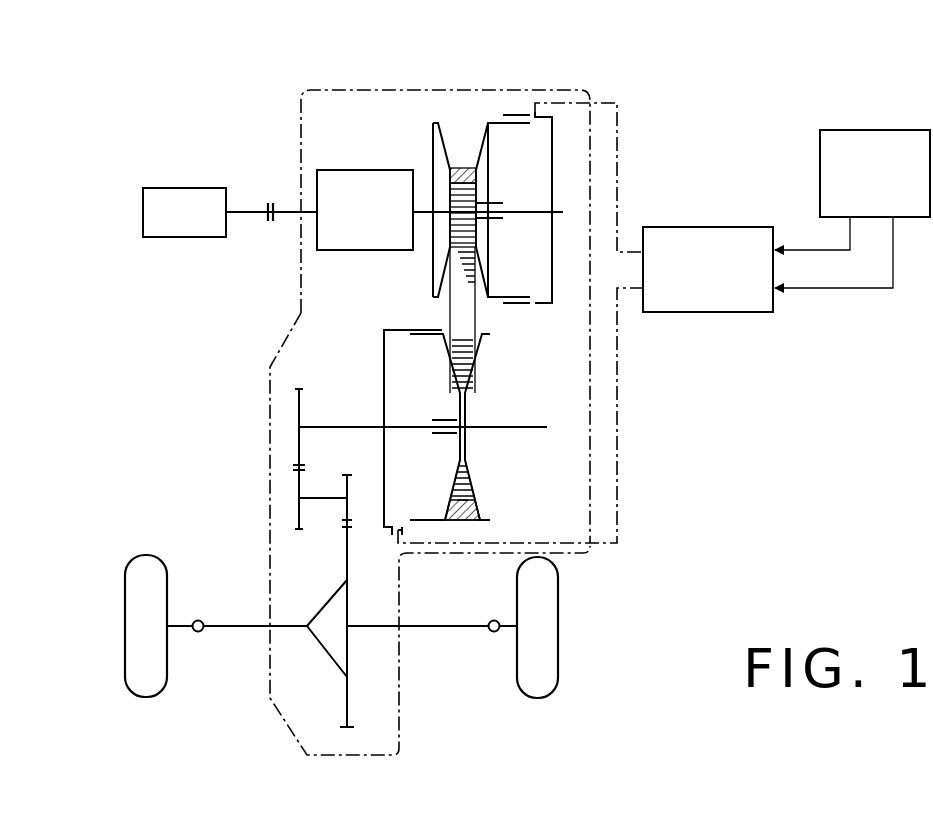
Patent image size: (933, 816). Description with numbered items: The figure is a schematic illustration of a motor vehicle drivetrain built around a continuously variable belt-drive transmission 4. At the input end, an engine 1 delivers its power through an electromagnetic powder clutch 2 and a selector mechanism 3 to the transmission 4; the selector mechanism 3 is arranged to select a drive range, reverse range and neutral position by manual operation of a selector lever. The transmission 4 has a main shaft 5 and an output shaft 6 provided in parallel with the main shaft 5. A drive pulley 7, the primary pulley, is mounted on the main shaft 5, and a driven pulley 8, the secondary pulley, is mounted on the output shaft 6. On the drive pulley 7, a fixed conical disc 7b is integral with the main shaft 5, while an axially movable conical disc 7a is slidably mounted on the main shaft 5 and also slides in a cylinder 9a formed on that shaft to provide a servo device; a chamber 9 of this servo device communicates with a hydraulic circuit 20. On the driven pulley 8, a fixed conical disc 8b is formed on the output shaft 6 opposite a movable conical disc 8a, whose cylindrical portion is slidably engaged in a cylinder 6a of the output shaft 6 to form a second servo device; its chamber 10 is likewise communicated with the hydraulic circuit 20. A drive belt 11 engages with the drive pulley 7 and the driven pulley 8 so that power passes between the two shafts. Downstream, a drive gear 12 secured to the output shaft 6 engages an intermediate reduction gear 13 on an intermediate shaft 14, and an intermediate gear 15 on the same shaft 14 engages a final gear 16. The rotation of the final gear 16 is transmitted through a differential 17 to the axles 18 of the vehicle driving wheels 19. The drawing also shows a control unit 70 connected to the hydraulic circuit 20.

The engine 1 is at (192, 187).
The electromagnetic powder clutch 2 is at (272, 200).
The selector mechanism 3 is at (367, 170).
The continuously variable belt-drive transmission 4 is at (472, 122).
The main shaft 5 is at (422, 217).
The output shaft 6 is at (343, 425).
The cylinder of the output shaft 6a is at (407, 328).
The drive pulley 7 is at (466, 167).
The movable conical disc 7a is at (497, 120).
The fixed conical disc 7b is at (440, 147).
The driven pulley 8 is at (472, 427).
The movable conical disc 8a is at (443, 340).
The fixed conical disc 8b is at (476, 372).
The chamber 9 is at (535, 170).
The cylinder 9a is at (533, 303).
The chamber 10 is at (384, 362).
The drive belt 11 is at (463, 517).
The drive gear 12 is at (299, 387).
The intermediate reduction gear 13 is at (300, 532).
The intermediate shaft 14 is at (320, 497).
The intermediate gear 15 is at (348, 476).
The final gear 16 is at (347, 728).
The differential 17 is at (332, 610).
The axles 18 is at (185, 630).
The driving wheels 19 is at (160, 583).
The hydraulic circuit 20 is at (703, 312).
The control unit 70 is at (858, 130).